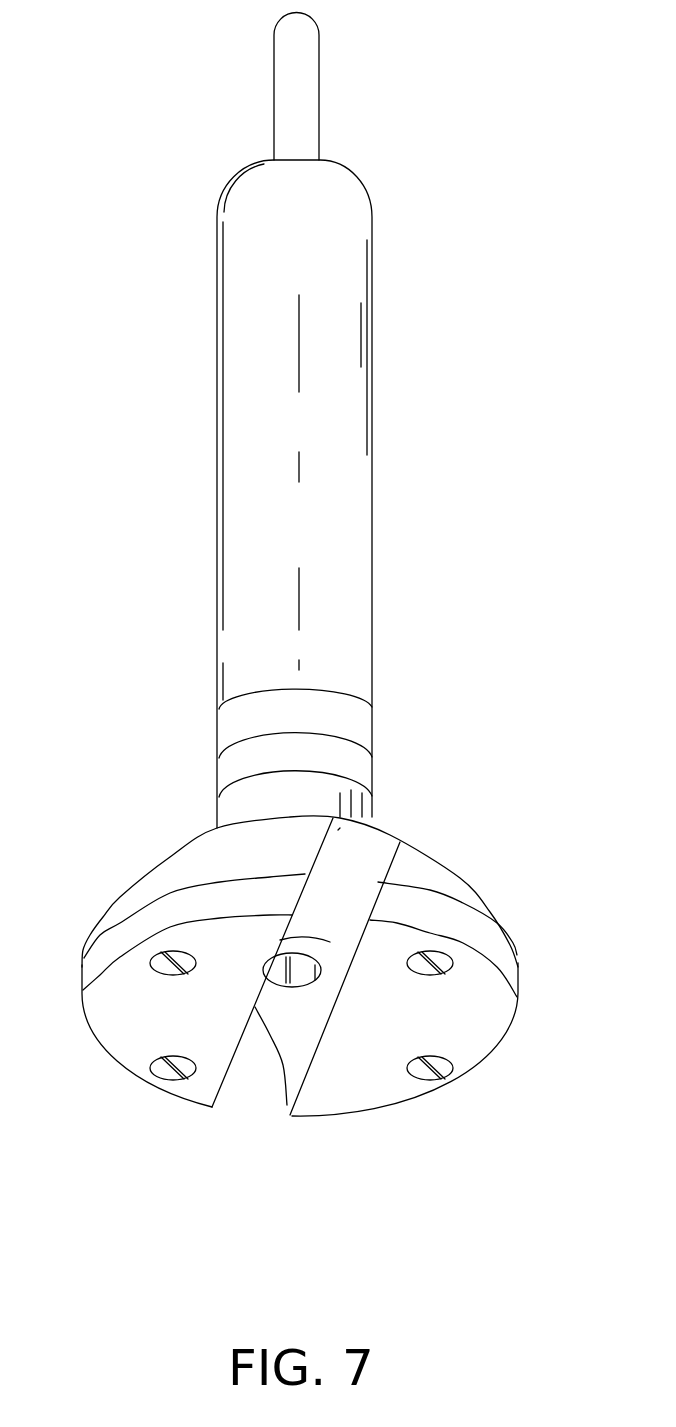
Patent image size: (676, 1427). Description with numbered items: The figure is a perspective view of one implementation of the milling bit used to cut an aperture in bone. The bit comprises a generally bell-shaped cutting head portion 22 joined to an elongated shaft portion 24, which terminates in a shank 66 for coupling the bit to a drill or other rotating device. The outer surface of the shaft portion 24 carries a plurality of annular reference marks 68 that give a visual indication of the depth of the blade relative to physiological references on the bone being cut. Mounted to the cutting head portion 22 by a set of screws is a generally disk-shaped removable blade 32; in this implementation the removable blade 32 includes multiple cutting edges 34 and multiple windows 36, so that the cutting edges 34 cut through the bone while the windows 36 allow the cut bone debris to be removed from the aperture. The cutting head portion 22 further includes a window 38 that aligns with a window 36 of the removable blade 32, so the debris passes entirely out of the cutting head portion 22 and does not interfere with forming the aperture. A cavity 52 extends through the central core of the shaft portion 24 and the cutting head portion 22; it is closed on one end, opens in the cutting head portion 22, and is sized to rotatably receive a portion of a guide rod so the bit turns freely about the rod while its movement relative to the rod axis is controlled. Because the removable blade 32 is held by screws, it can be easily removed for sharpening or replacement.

The cutting head portion 22 is at (478, 903).
The shaft portion 24 is at (355, 462).
The removable blade 32 is at (103, 1035).
The cutting edge 34 is at (212, 1105).
The window 36 is at (258, 1098).
The window 38 is at (350, 865).
The cavity 52 is at (302, 975).
The shank 66 is at (313, 82).
The annular reference marks 68 is at (348, 778).